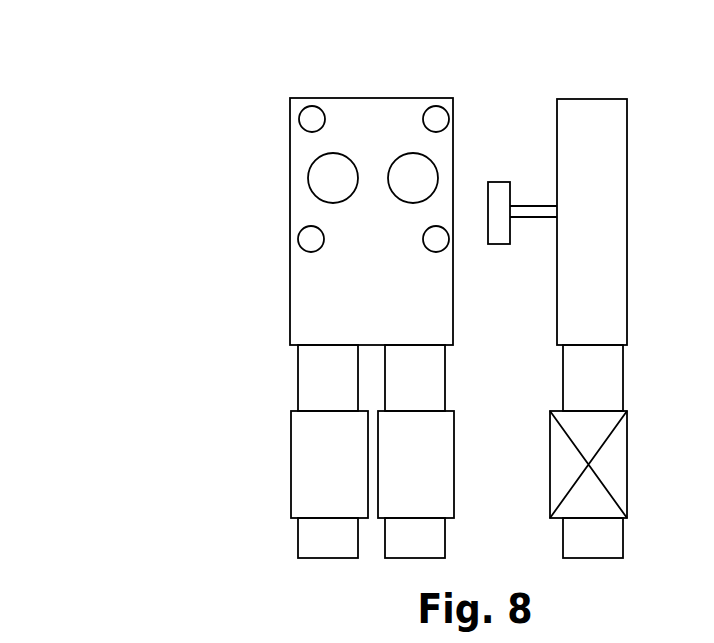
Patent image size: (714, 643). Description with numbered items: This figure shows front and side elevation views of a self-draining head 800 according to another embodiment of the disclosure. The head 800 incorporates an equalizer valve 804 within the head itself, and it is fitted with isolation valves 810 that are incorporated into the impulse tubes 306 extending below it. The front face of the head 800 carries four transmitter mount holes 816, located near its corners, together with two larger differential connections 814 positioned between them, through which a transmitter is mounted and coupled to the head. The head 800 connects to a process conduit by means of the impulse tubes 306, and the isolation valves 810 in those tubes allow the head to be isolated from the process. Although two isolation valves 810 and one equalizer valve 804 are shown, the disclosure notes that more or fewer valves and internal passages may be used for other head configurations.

The head 800 is at (158, 218).
The differential connections 814 is at (400, 153).
The transmitter mount holes 816 is at (299, 118).
The equalizer valve 804 is at (494, 182).
The impulse tubes 306 is at (558, 377).
The isolation valves 810 is at (550, 448).